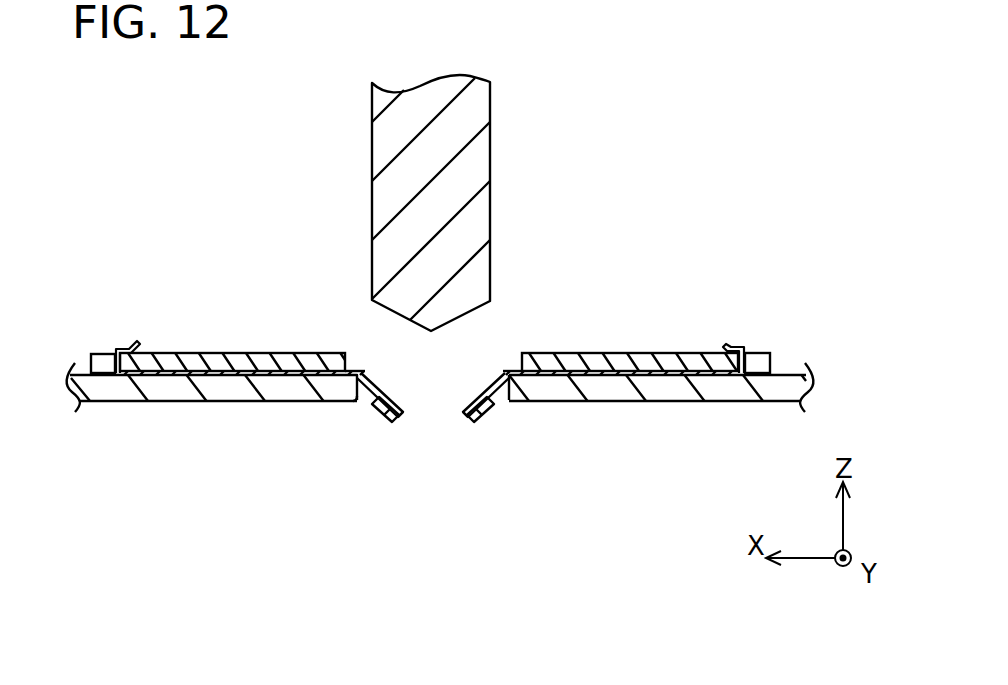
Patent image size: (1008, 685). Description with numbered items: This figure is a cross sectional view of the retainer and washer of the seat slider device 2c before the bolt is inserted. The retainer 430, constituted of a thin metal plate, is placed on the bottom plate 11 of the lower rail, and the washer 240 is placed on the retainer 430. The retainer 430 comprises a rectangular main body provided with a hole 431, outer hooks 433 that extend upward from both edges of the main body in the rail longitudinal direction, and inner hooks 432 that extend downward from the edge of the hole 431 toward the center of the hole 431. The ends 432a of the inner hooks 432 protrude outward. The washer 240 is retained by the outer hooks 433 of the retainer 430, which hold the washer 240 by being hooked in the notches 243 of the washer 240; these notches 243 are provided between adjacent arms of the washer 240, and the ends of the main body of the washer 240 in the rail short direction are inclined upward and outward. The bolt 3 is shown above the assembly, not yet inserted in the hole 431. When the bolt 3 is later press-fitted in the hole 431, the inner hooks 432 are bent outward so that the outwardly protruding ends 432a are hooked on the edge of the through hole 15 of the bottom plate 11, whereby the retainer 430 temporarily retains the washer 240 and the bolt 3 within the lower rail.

The seat slider device 2c is at (645, 128).
The bolt 3 is at (372, 201).
The bottom plate 11 is at (676, 402).
The through hole 15 is at (357, 400).
The washer 240 is at (633, 352).
The notches 243 is at (95, 352).
The retainer 430 is at (510, 372).
The hole 431 is at (366, 372).
The inner hooks 432 is at (463, 413).
The ends 432a is at (383, 418).
The outer hooks 433 is at (138, 343).